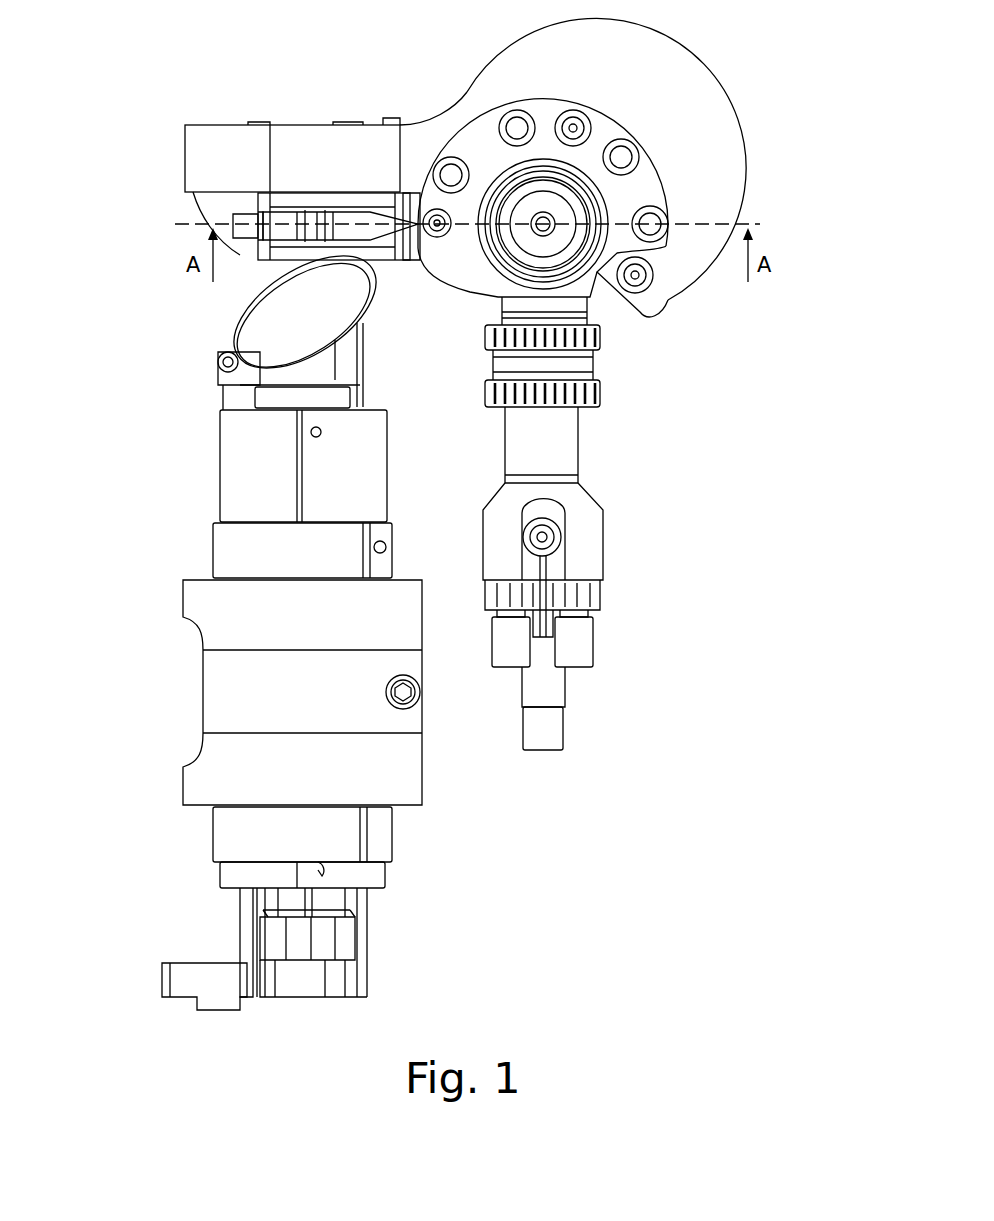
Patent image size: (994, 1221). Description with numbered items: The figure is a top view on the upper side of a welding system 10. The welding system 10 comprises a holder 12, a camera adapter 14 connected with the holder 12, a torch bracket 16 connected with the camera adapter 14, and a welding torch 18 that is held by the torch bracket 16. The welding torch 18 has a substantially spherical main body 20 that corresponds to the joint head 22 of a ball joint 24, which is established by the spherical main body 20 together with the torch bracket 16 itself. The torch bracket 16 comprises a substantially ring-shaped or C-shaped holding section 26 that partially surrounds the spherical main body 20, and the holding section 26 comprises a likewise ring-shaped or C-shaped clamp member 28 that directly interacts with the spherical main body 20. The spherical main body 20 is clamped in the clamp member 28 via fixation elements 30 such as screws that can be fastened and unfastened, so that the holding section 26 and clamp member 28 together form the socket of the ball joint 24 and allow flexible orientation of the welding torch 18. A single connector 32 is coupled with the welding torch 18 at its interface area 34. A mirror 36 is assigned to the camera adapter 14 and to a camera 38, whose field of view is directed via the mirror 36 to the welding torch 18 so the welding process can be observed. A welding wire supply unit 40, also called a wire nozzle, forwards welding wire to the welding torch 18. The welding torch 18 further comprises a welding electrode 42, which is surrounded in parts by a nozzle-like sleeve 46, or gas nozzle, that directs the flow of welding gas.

The welding system 10 is at (151, 68).
The holder 12 is at (205, 979).
The camera adapter 14 is at (233, 560).
The torch bracket 16 is at (300, 135).
The welding torch 18 is at (595, 283).
The spherical main body 20 is at (455, 288).
The joint head 22 is at (490, 317).
The ball joint 24 is at (447, 104).
The holding section 26 is at (683, 206).
The clamp member 28 is at (650, 170).
The fixation elements 30 is at (578, 112).
The single connector 32 is at (588, 548).
The interface area 34 is at (600, 372).
The mirror 36 is at (285, 313).
The camera 38 is at (280, 400).
The welding wire supply unit 40 is at (377, 219).
The welding electrode 42 is at (545, 222).
The nozzle-like sleeve 46 is at (512, 200).